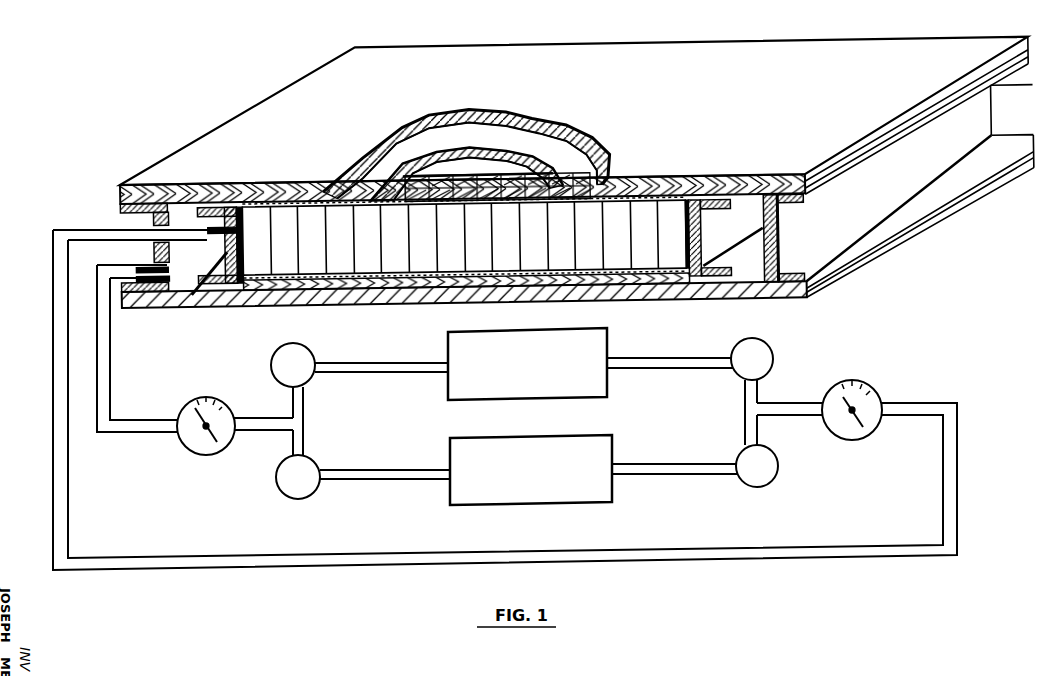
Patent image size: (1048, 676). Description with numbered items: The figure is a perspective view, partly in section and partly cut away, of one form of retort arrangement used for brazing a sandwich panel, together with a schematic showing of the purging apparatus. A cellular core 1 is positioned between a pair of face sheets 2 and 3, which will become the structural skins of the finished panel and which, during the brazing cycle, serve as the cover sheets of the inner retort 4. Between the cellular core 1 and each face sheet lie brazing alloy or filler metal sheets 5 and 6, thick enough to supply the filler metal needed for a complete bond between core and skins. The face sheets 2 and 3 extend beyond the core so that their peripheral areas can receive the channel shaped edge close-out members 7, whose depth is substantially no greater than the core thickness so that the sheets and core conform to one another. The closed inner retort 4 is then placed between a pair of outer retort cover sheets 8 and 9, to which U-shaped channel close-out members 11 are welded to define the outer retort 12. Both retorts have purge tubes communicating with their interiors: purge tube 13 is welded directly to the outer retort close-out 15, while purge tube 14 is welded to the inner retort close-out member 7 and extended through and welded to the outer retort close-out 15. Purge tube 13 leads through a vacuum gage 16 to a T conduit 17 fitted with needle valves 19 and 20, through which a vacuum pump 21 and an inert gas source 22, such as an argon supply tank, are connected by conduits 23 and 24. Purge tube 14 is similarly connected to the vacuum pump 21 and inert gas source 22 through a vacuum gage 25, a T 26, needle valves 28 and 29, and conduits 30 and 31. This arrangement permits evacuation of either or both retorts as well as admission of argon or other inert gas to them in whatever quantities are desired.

The cellular core 1 is at (478, 248).
The face sheet 2 is at (420, 142).
The face sheet 3 is at (194, 295).
The inner retort 4 is at (746, 226).
The brazing alloy sheet 5 is at (483, 168).
The brazing alloy sheet 6 is at (643, 275).
The channel shaped edge close-out member 7 is at (228, 249).
The outer retort cover sheet 8 is at (739, 99).
The outer retort cover sheet 9 is at (889, 240).
The U-shaped channel close-out member 11 is at (877, 179).
The outer retort 12 is at (850, 22).
The purge tube 13 is at (103, 378).
The purge tube 14 is at (65, 322).
The outer retort close-out 15 is at (130, 200).
The vacuum gage 16 is at (209, 396).
The T conduit 17 is at (300, 408).
The needle valve 19 is at (305, 346).
The needle valve 20 is at (281, 463).
The vacuum pump 21 is at (586, 332).
The inert gas source 22 is at (590, 443).
The conduit 23 is at (360, 363).
The conduit 24 is at (400, 473).
The vacuum gage 25 is at (859, 381).
The T 26 is at (755, 400).
The needle valve 28 is at (766, 341).
The needle valve 29 is at (767, 486).
The conduit 30 is at (653, 362).
The conduit 31 is at (647, 465).